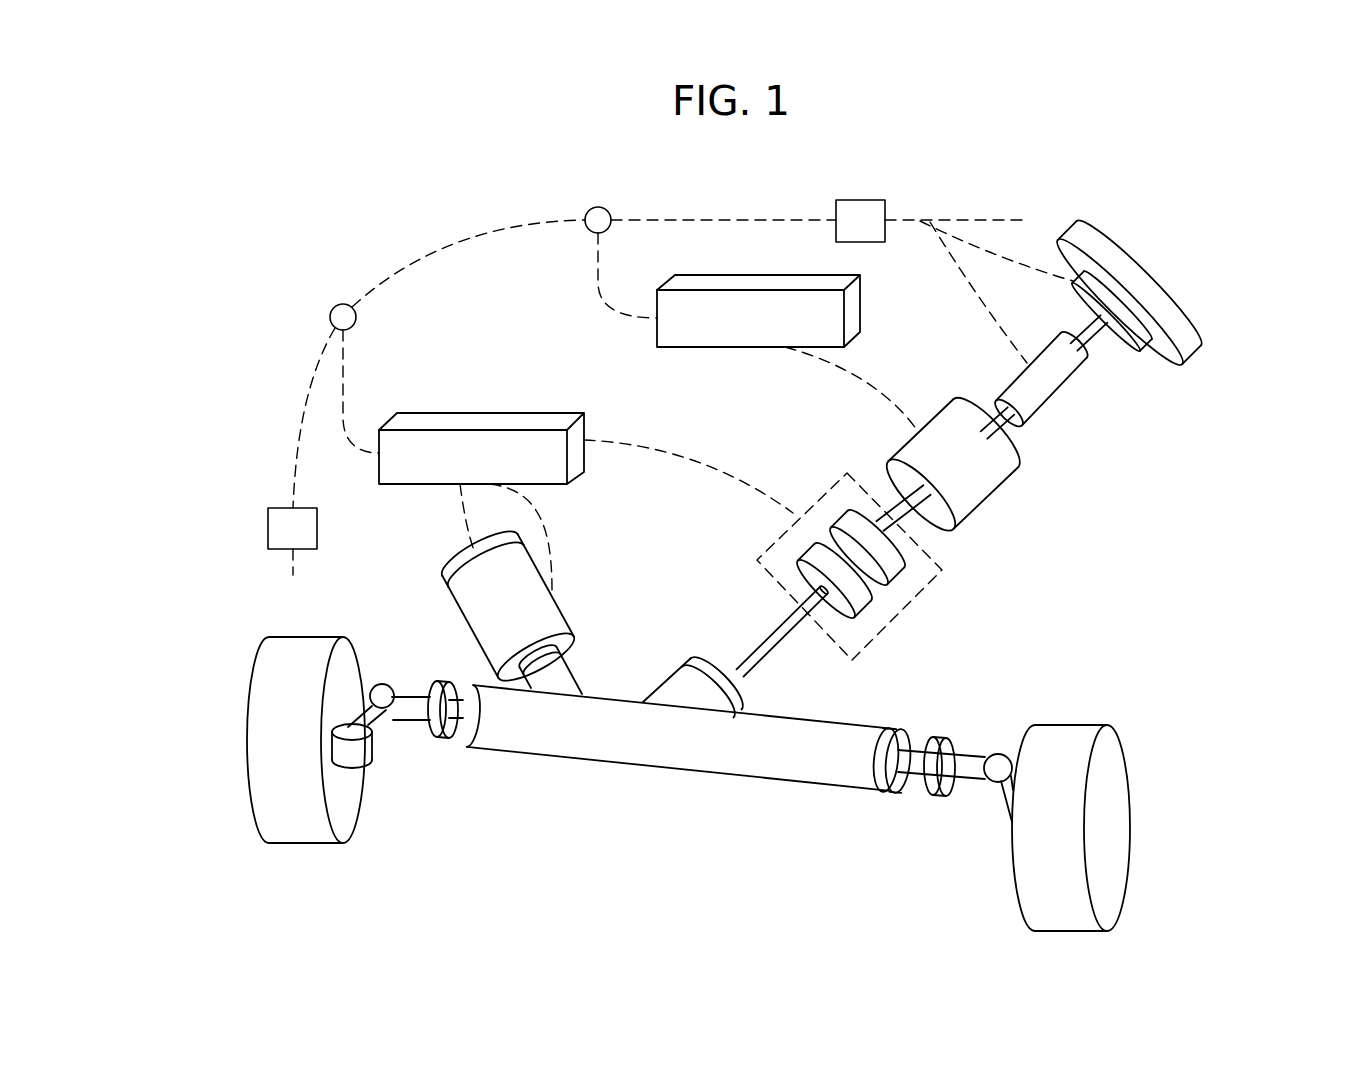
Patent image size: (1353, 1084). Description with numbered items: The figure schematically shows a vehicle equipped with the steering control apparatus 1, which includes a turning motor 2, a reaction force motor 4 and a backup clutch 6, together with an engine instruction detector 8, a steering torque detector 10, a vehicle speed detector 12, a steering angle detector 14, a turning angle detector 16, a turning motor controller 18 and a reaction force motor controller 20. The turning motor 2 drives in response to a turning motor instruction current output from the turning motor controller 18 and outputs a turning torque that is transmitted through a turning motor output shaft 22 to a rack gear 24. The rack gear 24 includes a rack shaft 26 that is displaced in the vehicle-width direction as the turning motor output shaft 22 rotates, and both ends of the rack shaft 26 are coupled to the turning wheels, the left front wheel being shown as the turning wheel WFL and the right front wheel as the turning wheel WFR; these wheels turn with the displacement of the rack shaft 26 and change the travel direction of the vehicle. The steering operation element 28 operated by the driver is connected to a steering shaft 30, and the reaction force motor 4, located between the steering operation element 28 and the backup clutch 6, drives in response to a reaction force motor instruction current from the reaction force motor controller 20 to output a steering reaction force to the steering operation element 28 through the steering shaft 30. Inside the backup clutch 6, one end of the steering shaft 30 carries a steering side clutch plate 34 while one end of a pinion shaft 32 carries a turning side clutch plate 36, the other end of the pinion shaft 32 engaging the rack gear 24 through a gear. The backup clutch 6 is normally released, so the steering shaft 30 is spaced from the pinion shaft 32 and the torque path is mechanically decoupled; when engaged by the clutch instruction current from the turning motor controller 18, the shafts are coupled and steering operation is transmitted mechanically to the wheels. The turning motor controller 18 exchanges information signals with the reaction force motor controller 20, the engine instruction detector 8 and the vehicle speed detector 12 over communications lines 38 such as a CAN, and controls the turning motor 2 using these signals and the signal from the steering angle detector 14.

The steering control apparatus 1 is at (412, 197).
The turning motor 2 is at (480, 620).
The reaction force motor 4 is at (985, 482).
The backup clutch 6 is at (913, 622).
The engine instruction detector 8 is at (865, 200).
The steering torque detector 10 is at (1047, 380).
The vehicle speed detector 12 is at (268, 530).
The steering angle detector 14 is at (1138, 332).
The turning angle detector 16 is at (465, 562).
The turning motor controller 18 is at (480, 420).
The reaction force motor controller 20 is at (718, 278).
The turning motor output shaft 22 is at (545, 678).
The rack gear 24 is at (748, 770).
The rack shaft 26 is at (893, 765).
The steering operation element 28 is at (1143, 282).
The steering shaft 30 is at (1013, 427).
The pinion shaft 32 is at (783, 648).
The steering side clutch plate 34 is at (895, 573).
The turning side clutch plate 36 is at (858, 605).
The communications lines 38 is at (297, 433).
The turning wheel WFR is at (258, 730).
The turning wheel WFL is at (1120, 822).